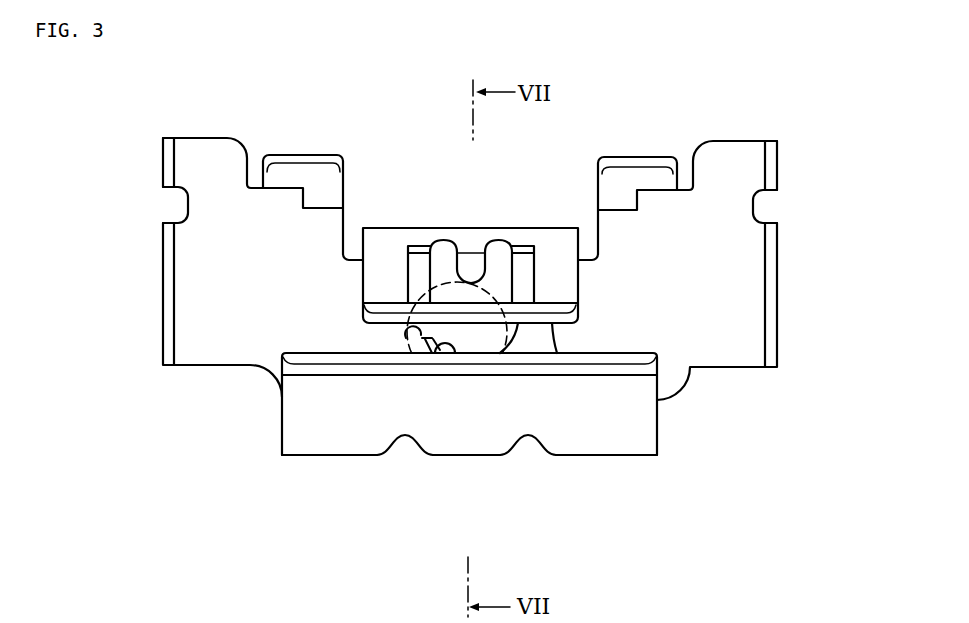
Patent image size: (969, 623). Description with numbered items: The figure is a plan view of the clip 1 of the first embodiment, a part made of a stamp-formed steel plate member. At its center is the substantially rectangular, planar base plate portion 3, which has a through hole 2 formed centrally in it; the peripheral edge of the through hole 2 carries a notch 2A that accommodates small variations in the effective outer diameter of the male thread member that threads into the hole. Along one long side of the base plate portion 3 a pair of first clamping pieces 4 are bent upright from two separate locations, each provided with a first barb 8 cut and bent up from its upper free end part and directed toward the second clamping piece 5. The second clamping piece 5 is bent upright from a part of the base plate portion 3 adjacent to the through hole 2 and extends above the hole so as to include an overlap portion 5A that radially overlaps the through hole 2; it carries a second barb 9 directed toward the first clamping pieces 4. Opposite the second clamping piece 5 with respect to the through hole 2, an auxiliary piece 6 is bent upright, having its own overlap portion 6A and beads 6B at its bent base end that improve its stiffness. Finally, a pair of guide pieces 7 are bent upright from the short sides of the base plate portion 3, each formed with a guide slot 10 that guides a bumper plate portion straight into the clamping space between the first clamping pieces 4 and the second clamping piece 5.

The clip 1 is at (427, 120).
The through hole 2 is at (455, 356).
The notch 2A is at (406, 344).
The base plate portion 3 is at (692, 367).
The first clamping piece 4 is at (293, 155).
The second clamping piece 5 is at (392, 233).
The overlap portion 5A is at (557, 353).
The auxiliary piece 6 is at (305, 442).
The overlap portion 6A is at (481, 358).
The bead 6B is at (397, 442).
The guide piece 7 is at (168, 163).
The first barb 8 is at (345, 207).
The second barb 9 is at (446, 242).
The guide slot 10 is at (170, 192).